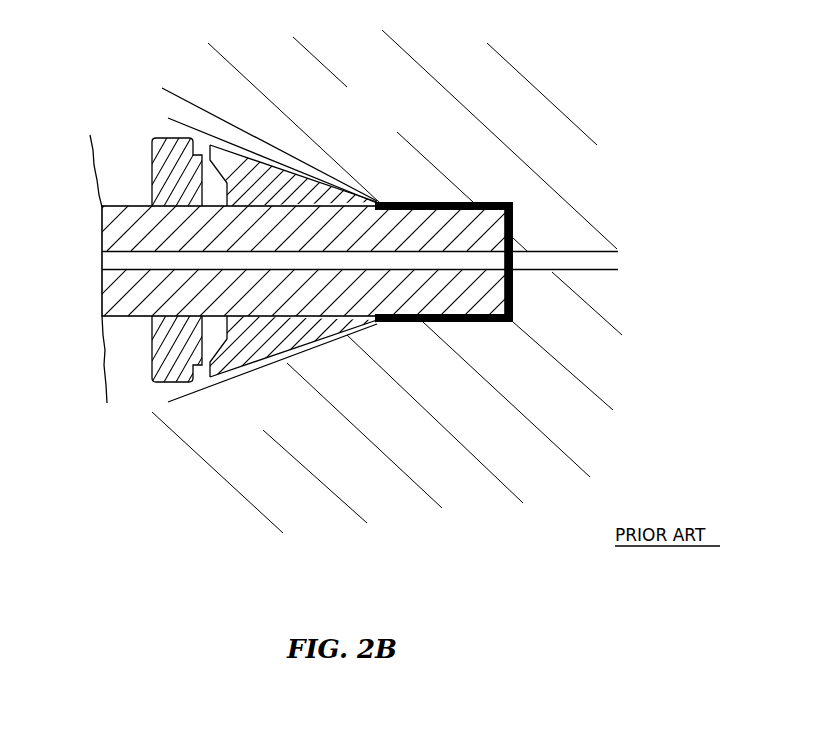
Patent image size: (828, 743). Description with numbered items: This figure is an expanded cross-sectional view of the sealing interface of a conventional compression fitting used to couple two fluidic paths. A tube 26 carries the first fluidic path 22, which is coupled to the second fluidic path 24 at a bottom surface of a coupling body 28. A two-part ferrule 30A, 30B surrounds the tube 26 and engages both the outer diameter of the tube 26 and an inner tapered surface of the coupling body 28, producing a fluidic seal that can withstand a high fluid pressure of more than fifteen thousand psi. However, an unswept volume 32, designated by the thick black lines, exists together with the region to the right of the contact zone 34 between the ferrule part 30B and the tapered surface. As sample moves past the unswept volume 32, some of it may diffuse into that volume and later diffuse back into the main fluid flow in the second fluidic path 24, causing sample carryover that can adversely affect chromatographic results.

The first fluidic path 22 is at (115, 262).
The second fluidic path 24 is at (608, 263).
The tube 26 is at (145, 207).
The coupling body 28 is at (386, 118).
The ferrule part 30A is at (171, 138).
The ferrule part 30B is at (303, 338).
The unswept volume 32 is at (429, 204).
The contact zone 34 is at (378, 203).